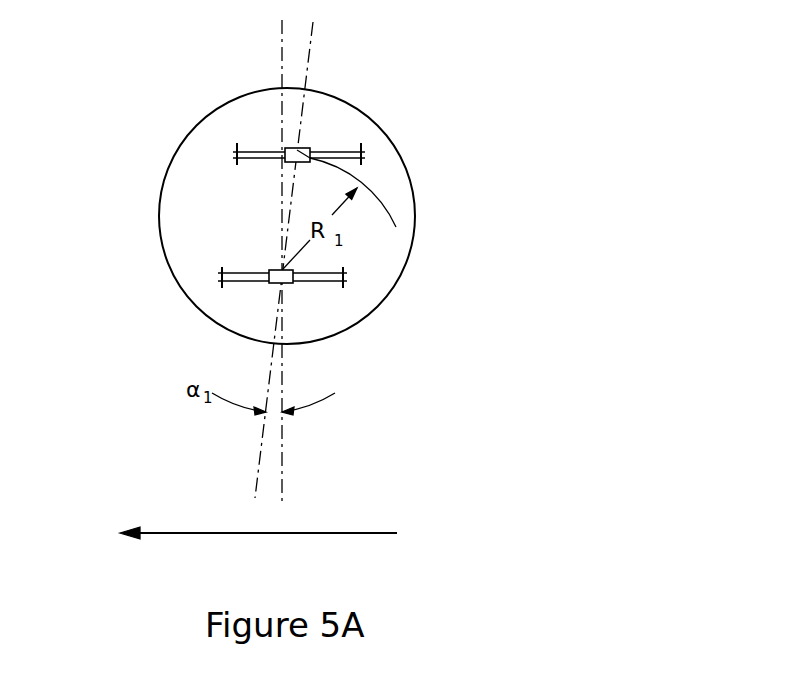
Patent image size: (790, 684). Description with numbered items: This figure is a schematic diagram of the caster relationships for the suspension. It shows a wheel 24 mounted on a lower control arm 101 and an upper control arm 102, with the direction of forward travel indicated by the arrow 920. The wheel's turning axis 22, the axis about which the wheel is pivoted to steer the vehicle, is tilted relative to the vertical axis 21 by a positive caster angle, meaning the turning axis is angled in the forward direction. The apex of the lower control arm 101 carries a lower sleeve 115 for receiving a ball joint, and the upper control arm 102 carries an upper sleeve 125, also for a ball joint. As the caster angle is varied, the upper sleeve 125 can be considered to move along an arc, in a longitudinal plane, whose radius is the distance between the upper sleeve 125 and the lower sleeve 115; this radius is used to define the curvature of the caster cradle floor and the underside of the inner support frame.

The vertical axis 21 is at (282, 43).
The turning axis 22 is at (310, 55).
The wheel 24 is at (180, 195).
The lower control arm 101 is at (332, 283).
The upper control arm 102 is at (253, 150).
The lower sleeve 115 is at (287, 284).
The upper sleeve 125 is at (303, 147).
The arrow 920 is at (365, 533).